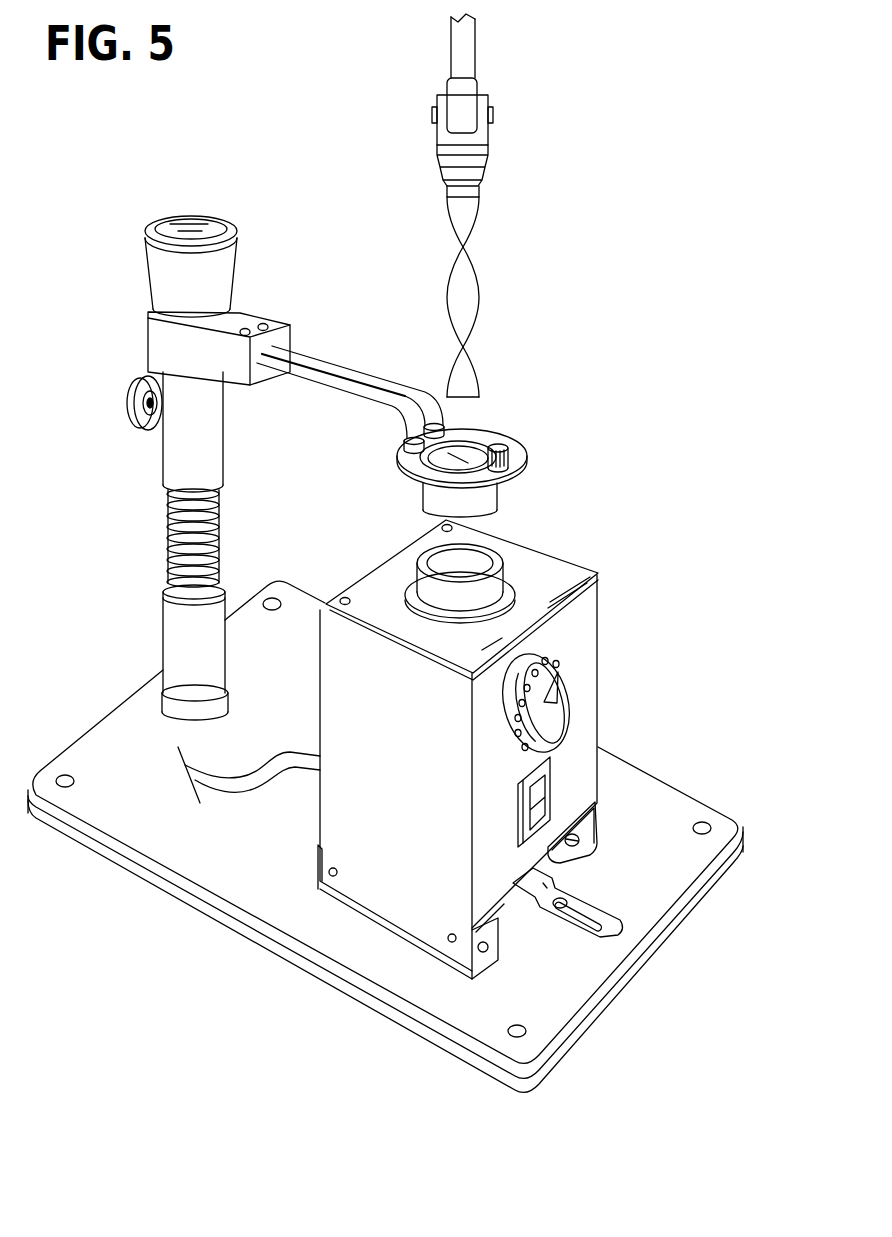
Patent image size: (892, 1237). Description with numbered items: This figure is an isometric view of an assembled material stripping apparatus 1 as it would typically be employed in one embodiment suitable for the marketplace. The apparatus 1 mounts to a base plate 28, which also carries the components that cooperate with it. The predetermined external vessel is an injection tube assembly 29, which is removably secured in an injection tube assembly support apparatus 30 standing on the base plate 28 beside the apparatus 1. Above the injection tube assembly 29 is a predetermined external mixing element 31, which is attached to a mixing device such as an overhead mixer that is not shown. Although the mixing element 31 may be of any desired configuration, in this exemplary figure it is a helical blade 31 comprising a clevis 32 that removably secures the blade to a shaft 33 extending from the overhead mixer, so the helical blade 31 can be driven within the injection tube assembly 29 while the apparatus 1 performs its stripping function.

The apparatus 1 is at (128, 467).
The base plate 28 is at (113, 808).
The injection tube assembly 29 is at (512, 562).
The injection tube assembly support apparatus 30 is at (388, 883).
The external mixing element 31 is at (487, 287).
The clevis 32 is at (432, 152).
The shaft 33 is at (475, 50).